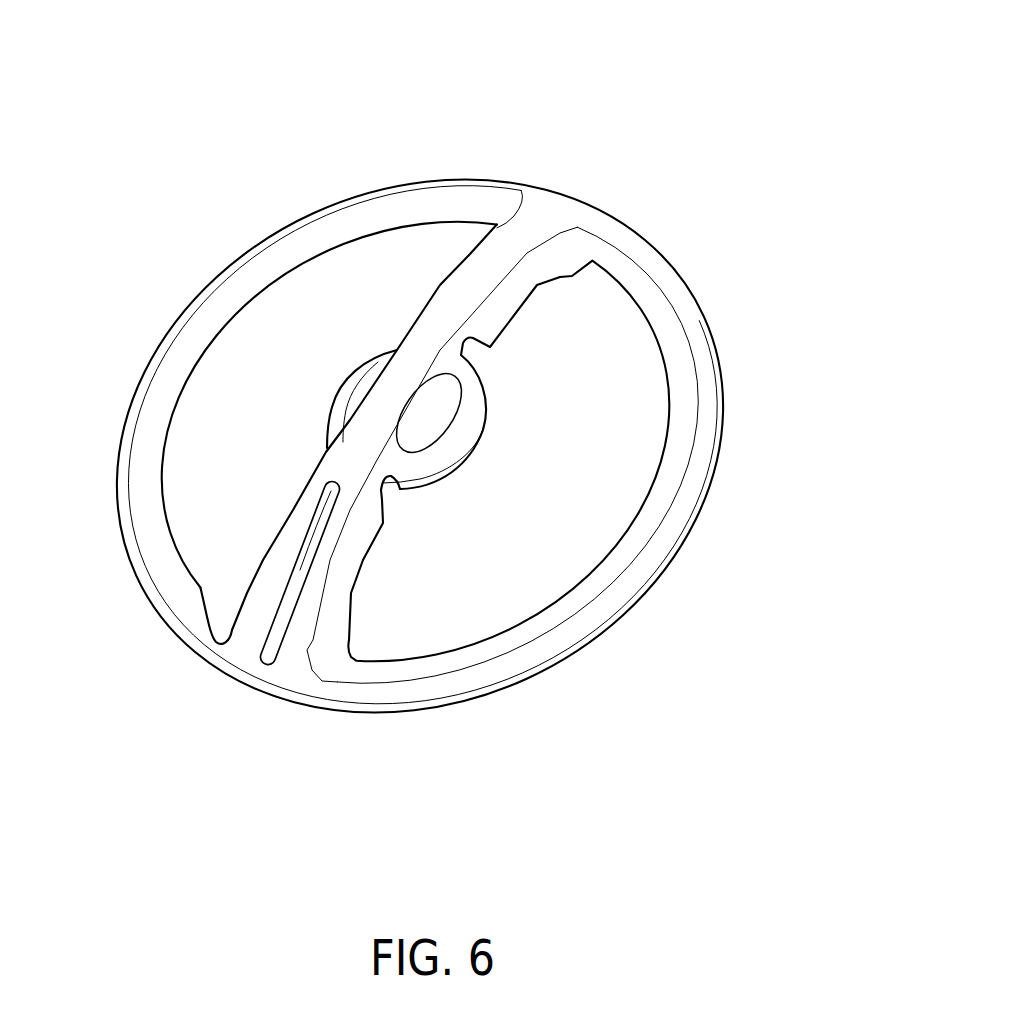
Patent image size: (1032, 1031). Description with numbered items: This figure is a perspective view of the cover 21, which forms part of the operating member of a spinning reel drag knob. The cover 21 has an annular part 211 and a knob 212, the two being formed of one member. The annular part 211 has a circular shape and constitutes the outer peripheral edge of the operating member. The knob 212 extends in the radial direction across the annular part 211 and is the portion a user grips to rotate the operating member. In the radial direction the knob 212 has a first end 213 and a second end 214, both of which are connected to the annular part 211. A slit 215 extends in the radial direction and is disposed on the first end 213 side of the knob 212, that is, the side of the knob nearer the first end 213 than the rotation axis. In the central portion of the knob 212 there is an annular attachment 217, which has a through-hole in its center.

The cover 21 is at (420, 411).
The annular part 211 is at (638, 230).
The knob 212 is at (431, 275).
The first end 213 is at (263, 583).
The second end 214 is at (507, 233).
The slit 215 is at (277, 613).
The annular attachment 217 is at (487, 428).